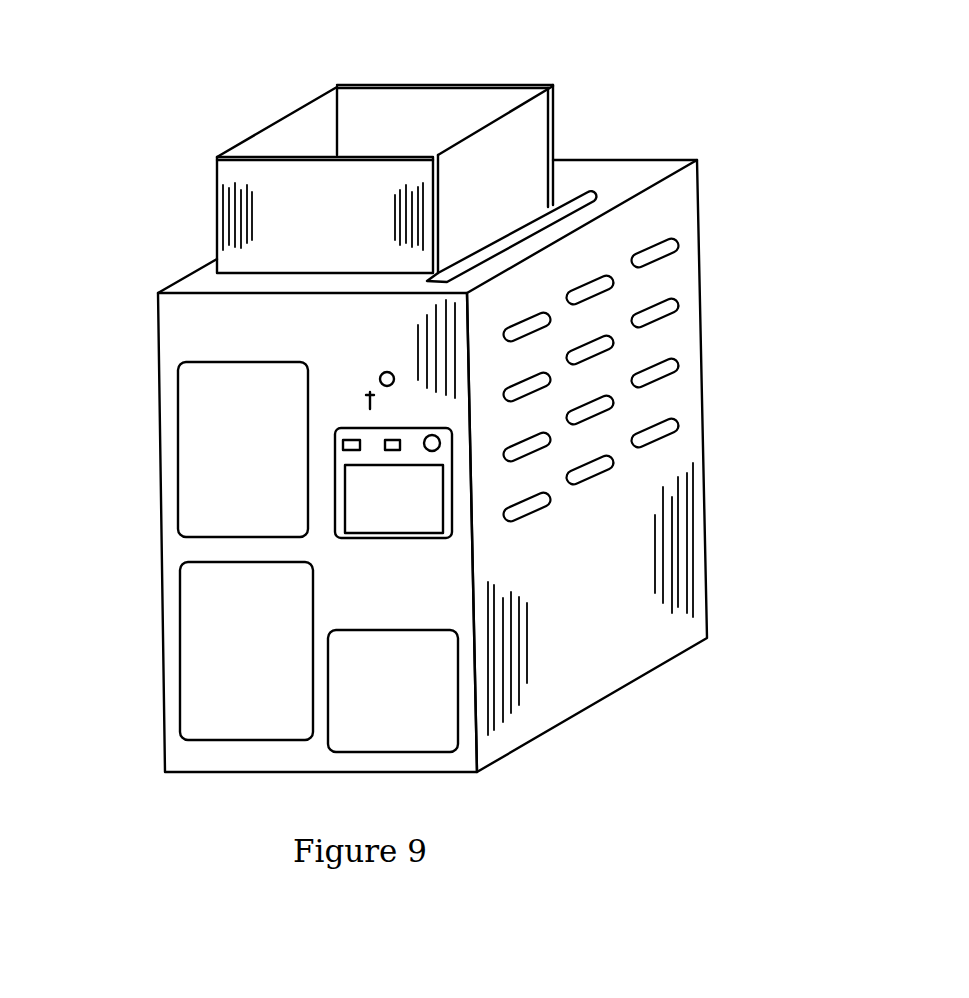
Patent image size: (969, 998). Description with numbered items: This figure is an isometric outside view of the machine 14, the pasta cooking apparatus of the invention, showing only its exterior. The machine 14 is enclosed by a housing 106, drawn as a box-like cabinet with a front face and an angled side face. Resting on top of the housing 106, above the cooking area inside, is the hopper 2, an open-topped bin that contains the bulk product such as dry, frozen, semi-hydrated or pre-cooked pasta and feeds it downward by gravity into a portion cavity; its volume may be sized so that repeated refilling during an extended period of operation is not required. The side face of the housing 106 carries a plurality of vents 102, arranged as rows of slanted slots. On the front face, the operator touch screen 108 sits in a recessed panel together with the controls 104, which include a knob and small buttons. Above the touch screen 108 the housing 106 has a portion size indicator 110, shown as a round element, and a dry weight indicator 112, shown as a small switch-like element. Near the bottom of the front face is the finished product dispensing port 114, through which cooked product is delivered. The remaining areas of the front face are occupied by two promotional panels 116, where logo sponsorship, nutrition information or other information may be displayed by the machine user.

The machine 14 is at (148, 158).
The hopper 2 is at (458, 113).
The vents 102 is at (650, 253).
The controls 104 is at (434, 444).
The housing 106 is at (190, 545).
The operator touch screen 108 is at (345, 470).
The portion size indicator 110 is at (380, 374).
The dry weight indicator 112 is at (366, 398).
The finished product dispensing port 114 is at (400, 718).
The promotional panels 116 is at (212, 477).